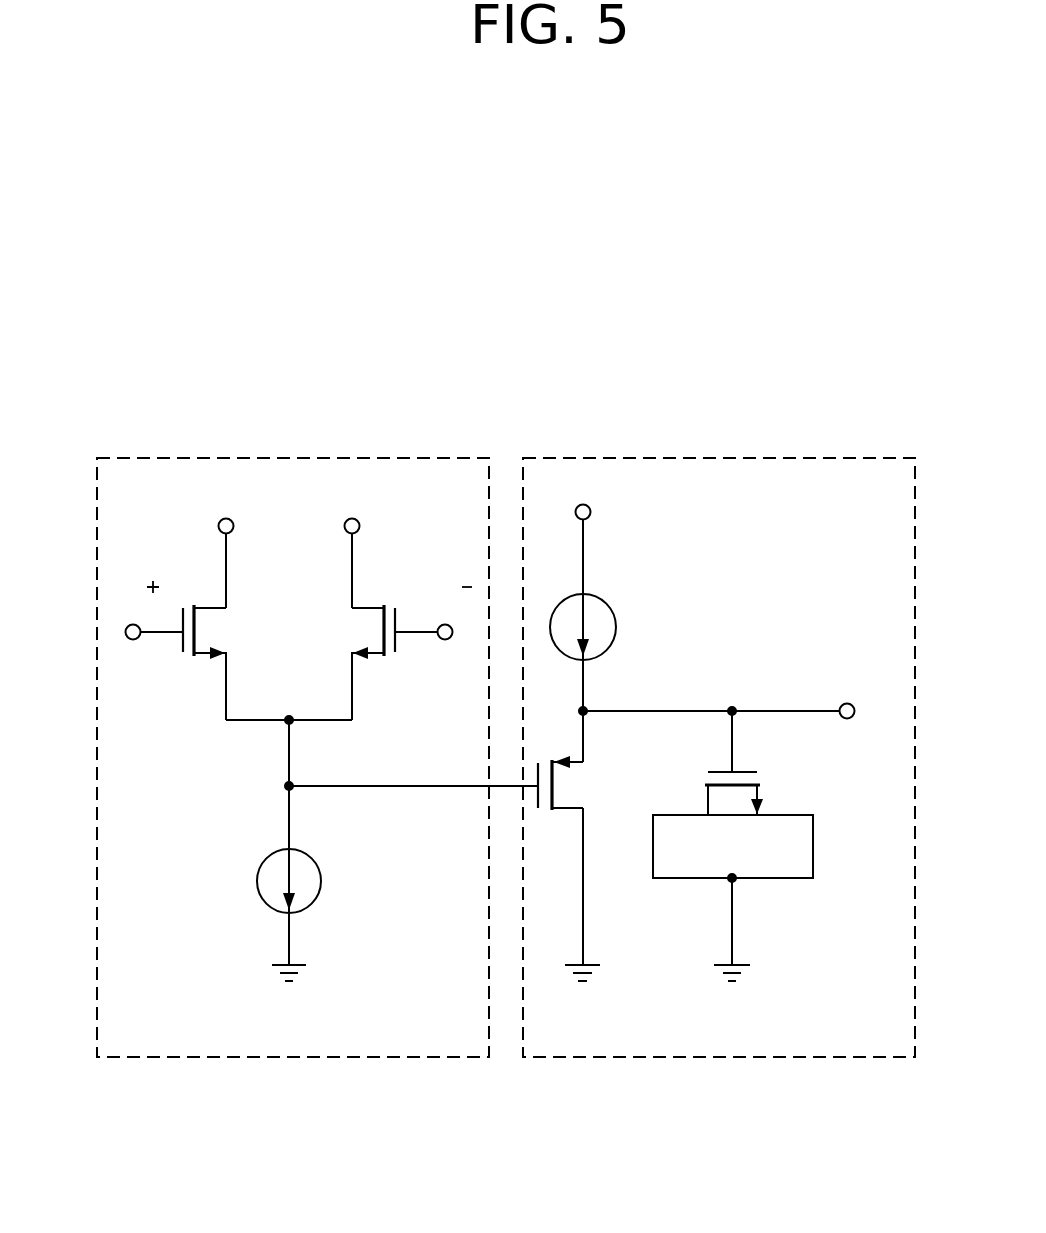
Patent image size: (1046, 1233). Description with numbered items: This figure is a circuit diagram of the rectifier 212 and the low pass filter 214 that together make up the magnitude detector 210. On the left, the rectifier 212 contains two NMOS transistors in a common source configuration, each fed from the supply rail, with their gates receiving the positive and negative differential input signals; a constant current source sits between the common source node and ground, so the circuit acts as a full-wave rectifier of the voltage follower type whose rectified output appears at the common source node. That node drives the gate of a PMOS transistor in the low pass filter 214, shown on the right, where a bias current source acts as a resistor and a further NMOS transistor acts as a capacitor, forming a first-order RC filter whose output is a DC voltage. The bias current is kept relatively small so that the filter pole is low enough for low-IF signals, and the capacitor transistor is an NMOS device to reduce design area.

The magnitude detector 210 is at (555, 282).
The rectifier 212 is at (462, 458).
The low pass filter (LPF) 214 is at (859, 458).